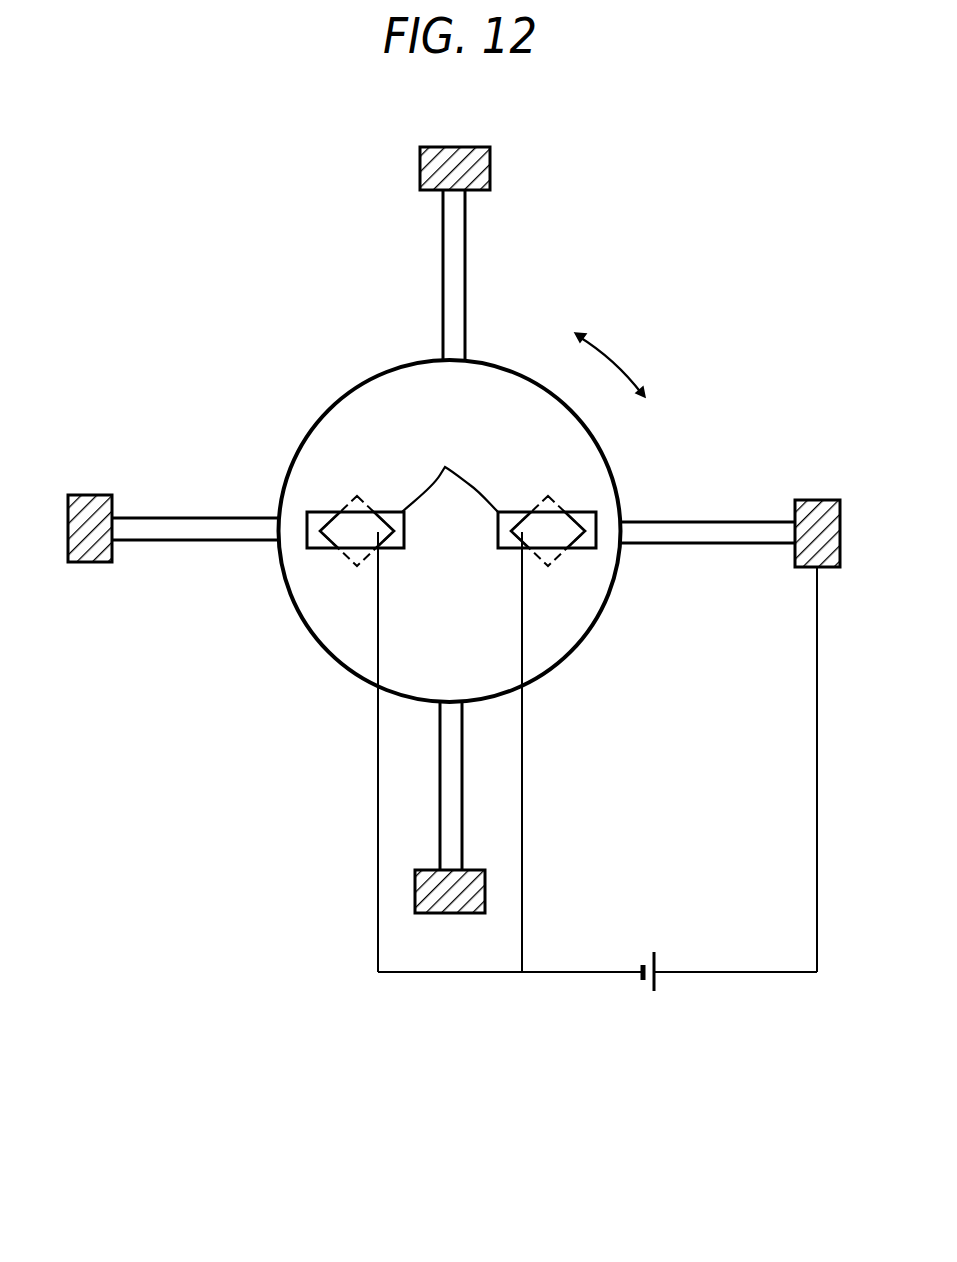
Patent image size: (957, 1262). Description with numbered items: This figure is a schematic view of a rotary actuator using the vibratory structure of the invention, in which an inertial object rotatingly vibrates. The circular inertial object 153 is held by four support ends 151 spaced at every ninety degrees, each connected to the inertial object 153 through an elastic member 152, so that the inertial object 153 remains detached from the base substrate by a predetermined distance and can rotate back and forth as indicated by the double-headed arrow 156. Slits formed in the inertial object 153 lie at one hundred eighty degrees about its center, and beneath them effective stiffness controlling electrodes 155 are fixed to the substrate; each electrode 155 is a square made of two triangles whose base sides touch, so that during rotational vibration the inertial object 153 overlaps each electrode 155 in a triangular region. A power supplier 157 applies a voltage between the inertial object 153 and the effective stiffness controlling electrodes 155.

The support end 151 is at (420, 173).
The elastic member 152 is at (467, 278).
The inertial object 153 is at (357, 648).
The effective stiffness controlling electrode 155 is at (343, 530).
The rotation direction 156 is at (624, 364).
The power supplier 157 is at (657, 953).